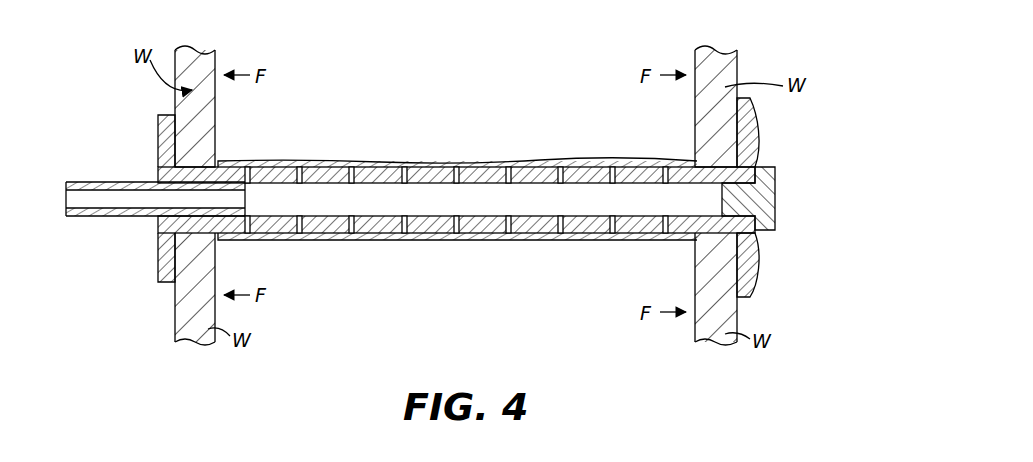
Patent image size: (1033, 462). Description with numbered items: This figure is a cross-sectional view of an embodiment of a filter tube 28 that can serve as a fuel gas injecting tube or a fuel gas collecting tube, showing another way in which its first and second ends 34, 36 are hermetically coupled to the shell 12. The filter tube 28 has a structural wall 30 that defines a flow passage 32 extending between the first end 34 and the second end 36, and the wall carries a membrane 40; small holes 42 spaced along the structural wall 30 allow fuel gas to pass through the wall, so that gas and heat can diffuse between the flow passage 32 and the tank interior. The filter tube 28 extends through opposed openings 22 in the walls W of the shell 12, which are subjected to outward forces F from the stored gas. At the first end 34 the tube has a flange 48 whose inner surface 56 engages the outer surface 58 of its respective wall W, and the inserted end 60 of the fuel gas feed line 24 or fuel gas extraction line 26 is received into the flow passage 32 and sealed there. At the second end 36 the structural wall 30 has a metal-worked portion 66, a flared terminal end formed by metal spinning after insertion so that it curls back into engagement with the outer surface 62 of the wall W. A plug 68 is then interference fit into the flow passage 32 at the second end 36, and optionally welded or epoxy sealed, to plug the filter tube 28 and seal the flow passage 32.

The shell 12 is at (742, 62).
The opening 22 is at (217, 177).
The fuel gas feed line 24 is at (145, 175).
The fuel gas extraction line 26 is at (93, 183).
The filter tube 28 is at (437, 235).
The structural wall 30 is at (327, 226).
The flow passage 32 is at (446, 209).
The first end 34 is at (165, 178).
The second end 36 is at (740, 223).
The membrane 40 is at (585, 160).
The holes 42 is at (559, 168).
The flange 48 is at (165, 260).
The inner surface 56 is at (173, 309).
The outer surface 58 is at (178, 340).
The inserted end 60 is at (250, 187).
The outer surface 62 is at (737, 313).
The metal-worked portion 66 is at (757, 130).
The plug 68 is at (767, 184).